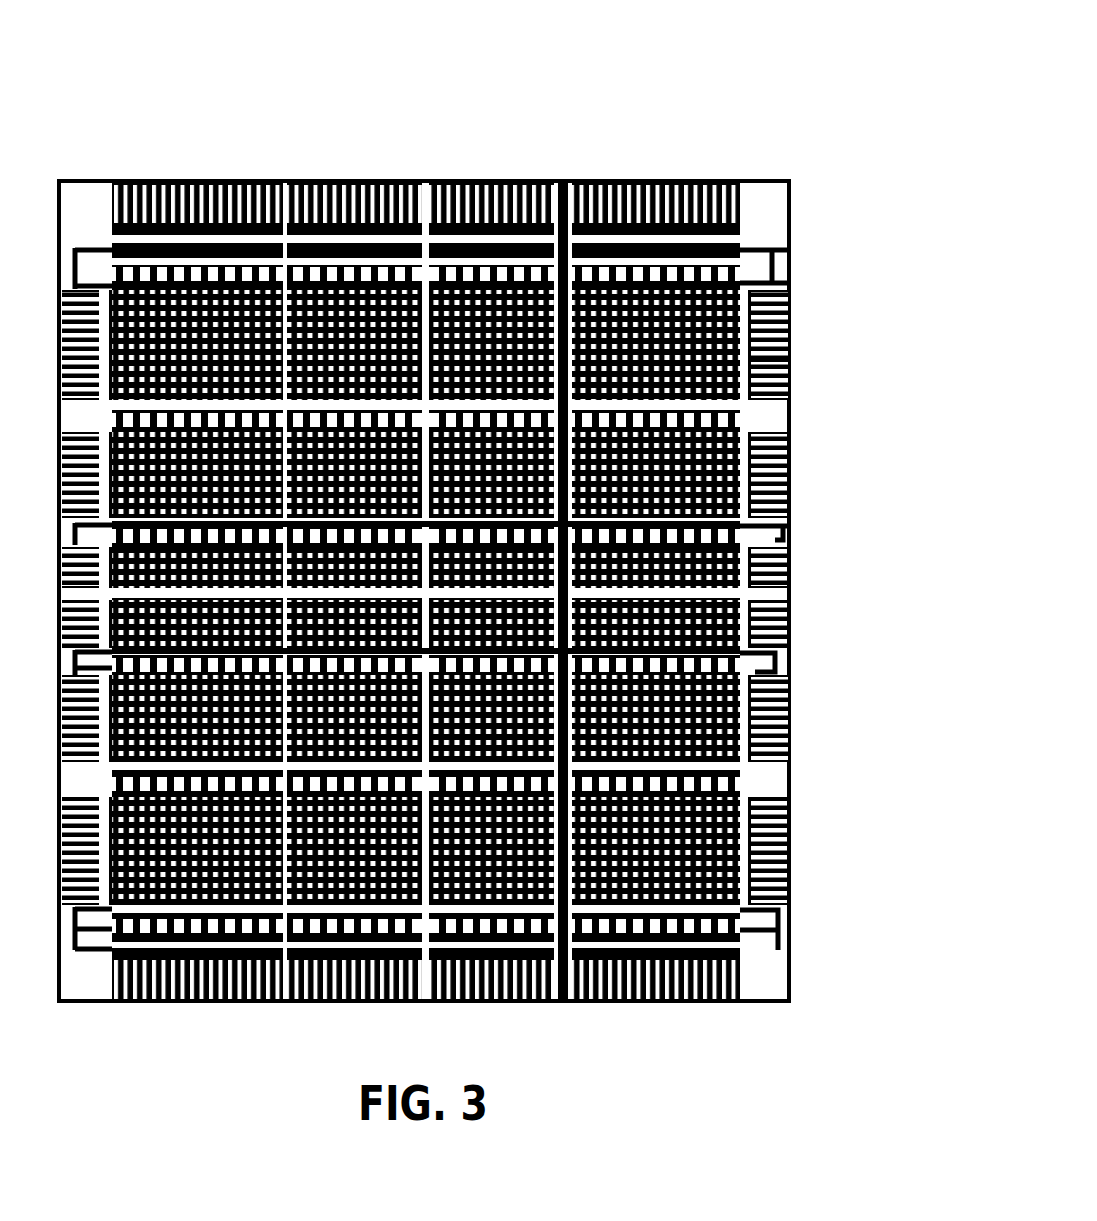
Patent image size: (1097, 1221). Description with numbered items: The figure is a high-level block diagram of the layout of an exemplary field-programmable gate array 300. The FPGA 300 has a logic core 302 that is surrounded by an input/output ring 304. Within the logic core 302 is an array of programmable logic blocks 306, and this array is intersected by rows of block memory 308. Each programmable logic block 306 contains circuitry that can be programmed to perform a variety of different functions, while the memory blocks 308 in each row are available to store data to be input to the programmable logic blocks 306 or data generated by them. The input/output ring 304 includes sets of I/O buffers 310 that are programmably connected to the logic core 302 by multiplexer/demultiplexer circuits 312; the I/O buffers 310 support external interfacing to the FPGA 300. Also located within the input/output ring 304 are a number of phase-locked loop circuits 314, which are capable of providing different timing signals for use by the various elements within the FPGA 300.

The field-programmable gate array 300 is at (767, 34).
The logic core 302 is at (345, 330).
The input/output ring 304 is at (483, 180).
The programmable logic block 306 is at (765, 696).
The block memory 308 is at (675, 775).
The I/O buffer 310 is at (790, 316).
The multiplexer/demultiplexer circuit 312 is at (768, 358).
The phase-locked loop circuit 314 is at (790, 283).